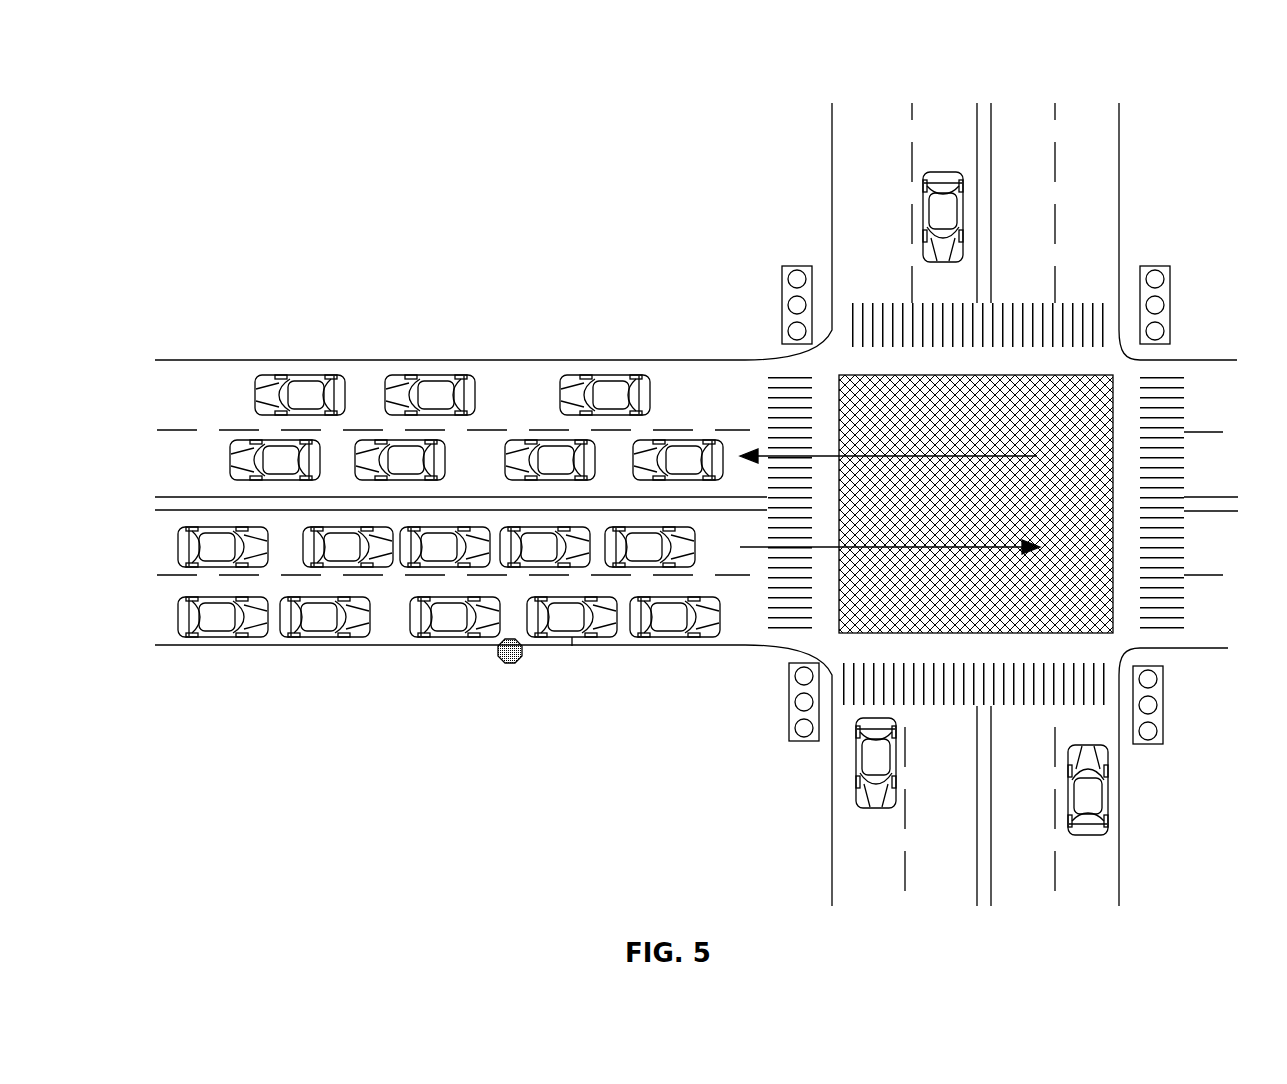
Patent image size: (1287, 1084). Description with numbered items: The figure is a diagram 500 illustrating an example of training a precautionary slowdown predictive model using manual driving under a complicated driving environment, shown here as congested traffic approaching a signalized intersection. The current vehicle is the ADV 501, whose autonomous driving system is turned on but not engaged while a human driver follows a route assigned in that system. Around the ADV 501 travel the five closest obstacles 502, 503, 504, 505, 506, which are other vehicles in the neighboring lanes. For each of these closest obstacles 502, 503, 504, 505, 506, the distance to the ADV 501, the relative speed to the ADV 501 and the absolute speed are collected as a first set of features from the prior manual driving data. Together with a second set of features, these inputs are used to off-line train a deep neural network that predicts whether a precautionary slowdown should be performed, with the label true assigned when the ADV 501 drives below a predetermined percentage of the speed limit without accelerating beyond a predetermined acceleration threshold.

The diagram 500 is at (698, 473).
The ADV 501 is at (316, 620).
The closest obstacle 502 is at (230, 620).
The closest obstacle 503 is at (446, 612).
The closest obstacle 504 is at (220, 553).
The closest obstacle 505 is at (343, 548).
The closest obstacle 506 is at (455, 544).